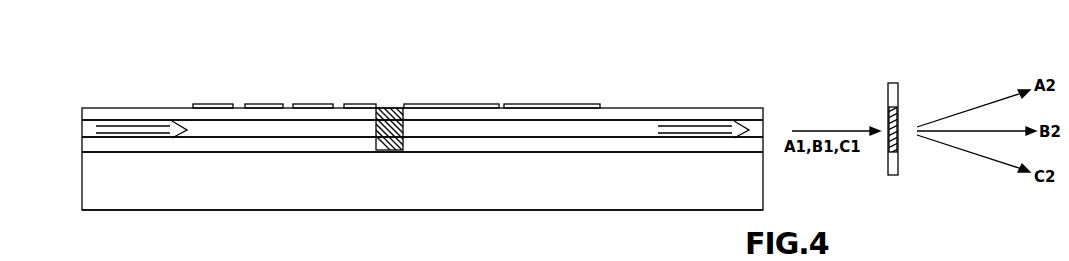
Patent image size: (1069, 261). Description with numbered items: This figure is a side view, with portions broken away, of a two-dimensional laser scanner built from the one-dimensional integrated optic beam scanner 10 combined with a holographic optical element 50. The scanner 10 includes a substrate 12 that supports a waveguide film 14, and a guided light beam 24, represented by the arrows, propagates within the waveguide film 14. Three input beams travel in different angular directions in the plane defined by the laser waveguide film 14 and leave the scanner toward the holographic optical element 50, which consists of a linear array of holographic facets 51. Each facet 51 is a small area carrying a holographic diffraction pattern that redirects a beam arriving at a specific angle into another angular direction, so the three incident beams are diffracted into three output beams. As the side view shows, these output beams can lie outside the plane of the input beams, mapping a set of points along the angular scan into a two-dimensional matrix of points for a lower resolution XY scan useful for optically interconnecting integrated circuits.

The integrated optic beam scanner 10 is at (625, 110).
The substrate 12 is at (93, 183).
The waveguide film 14 is at (88, 127).
The guided light beam 24 is at (127, 130).
The holographic optical element 50 is at (895, 90).
The holographic facets 51 is at (889, 166).